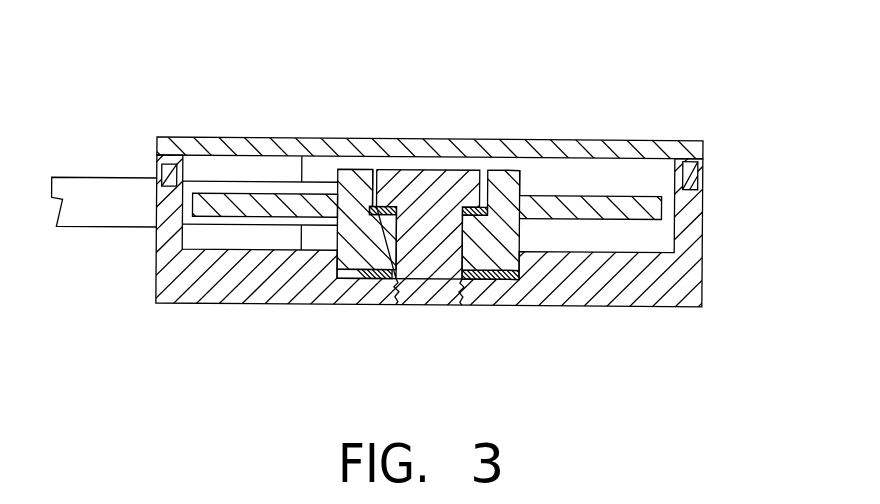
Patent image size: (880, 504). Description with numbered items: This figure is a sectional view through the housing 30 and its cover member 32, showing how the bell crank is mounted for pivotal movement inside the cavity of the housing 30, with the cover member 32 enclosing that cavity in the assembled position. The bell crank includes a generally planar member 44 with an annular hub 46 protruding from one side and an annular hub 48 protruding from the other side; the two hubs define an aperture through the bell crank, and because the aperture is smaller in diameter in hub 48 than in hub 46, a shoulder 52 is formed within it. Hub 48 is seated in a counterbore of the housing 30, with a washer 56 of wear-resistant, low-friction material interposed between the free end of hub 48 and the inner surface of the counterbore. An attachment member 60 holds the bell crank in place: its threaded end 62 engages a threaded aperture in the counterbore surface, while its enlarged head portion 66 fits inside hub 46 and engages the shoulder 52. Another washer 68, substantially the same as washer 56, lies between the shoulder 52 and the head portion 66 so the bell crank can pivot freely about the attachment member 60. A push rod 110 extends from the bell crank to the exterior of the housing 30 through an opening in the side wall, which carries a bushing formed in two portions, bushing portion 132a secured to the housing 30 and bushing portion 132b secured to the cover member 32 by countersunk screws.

The housing 30 is at (690, 288).
The cover member 32 is at (682, 139).
The planar member 44 is at (642, 204).
The annular hub 46 is at (518, 180).
The annular hub 48 is at (336, 270).
The shoulder 52 is at (482, 176).
The washer 56 is at (383, 276).
The attachment member 60 is at (430, 176).
The threaded end 62 is at (442, 295).
The head portion 66 is at (396, 170).
The washer 68 is at (350, 180).
The push rod 110 is at (103, 213).
The bushing portion 132a is at (230, 238).
The bushing portion 132b is at (200, 165).